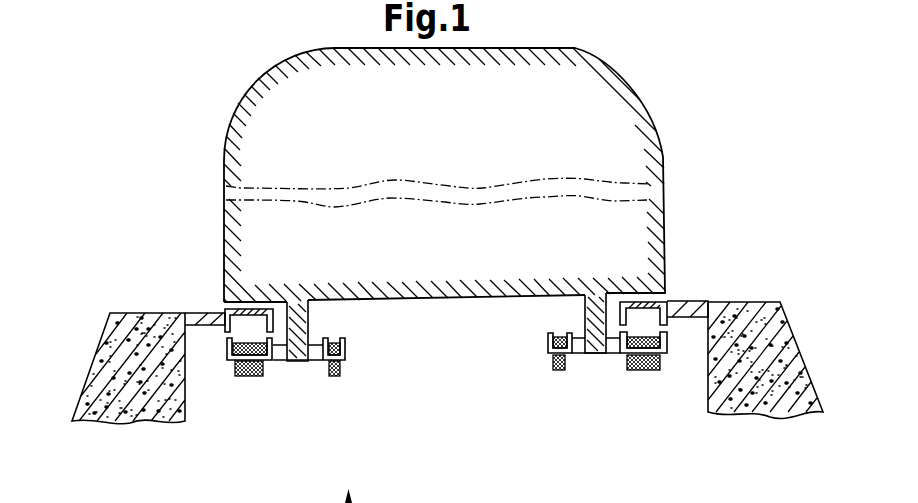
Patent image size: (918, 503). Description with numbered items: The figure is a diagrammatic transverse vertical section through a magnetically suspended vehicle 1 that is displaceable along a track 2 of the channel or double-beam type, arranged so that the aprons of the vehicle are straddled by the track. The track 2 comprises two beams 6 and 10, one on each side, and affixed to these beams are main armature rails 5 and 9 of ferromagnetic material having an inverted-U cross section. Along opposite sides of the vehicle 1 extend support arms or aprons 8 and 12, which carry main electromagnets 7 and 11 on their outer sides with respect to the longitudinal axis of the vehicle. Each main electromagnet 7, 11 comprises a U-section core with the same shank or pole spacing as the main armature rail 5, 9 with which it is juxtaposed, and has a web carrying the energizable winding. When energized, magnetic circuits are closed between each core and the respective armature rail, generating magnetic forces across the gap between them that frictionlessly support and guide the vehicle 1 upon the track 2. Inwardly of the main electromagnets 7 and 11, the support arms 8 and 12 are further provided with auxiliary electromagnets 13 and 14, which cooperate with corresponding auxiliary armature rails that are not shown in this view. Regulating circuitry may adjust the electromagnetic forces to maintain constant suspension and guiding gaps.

The vehicle 1 is at (632, 127).
The track 2 is at (447, 349).
The main armature rail 5 is at (225, 310).
The beam 6 is at (145, 408).
The main electromagnet 7 is at (267, 357).
The support arm 8 is at (308, 318).
The main armature rail 9 is at (667, 302).
The beam 10 is at (767, 400).
The main electromagnet 11 is at (627, 350).
The support arm 12 is at (598, 313).
The auxiliary electromagnet 13 is at (342, 355).
The auxiliary electromagnet 14 is at (555, 355).